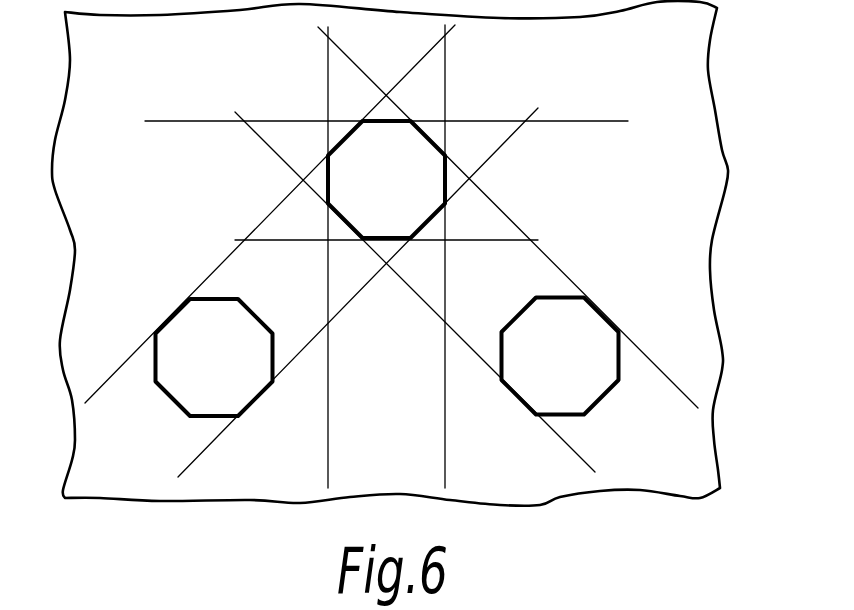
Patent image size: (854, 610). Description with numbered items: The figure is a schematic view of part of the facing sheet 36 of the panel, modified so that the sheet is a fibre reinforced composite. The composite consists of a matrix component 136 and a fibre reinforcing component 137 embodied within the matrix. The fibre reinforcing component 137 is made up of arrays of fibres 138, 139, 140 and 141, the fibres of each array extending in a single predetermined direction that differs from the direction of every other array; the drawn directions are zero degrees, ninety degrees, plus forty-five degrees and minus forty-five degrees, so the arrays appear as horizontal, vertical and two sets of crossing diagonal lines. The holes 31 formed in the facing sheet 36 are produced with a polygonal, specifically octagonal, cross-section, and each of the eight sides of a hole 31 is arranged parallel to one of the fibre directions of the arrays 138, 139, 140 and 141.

The holes 31 is at (410, 137).
The facing sheet 36 is at (710, 172).
The matrix component 136 is at (661, 254).
The fibre reinforcing component 137 is at (538, 188).
The array of fibres 138 is at (592, 120).
The array of fibres 139 is at (329, 432).
The array of fibres 140 is at (214, 267).
The array of fibres 141 is at (662, 373).